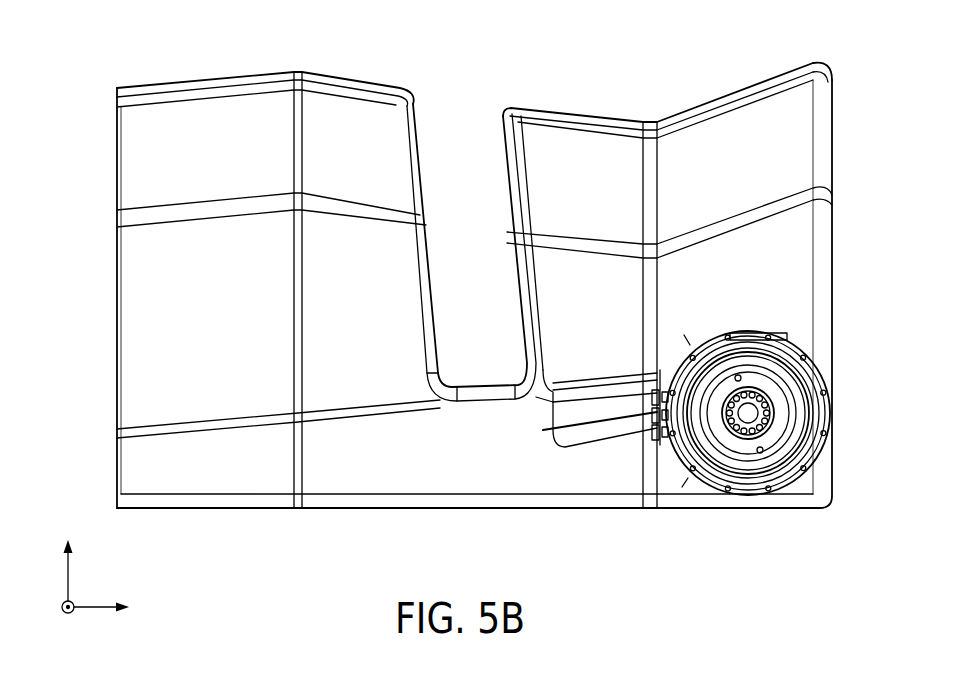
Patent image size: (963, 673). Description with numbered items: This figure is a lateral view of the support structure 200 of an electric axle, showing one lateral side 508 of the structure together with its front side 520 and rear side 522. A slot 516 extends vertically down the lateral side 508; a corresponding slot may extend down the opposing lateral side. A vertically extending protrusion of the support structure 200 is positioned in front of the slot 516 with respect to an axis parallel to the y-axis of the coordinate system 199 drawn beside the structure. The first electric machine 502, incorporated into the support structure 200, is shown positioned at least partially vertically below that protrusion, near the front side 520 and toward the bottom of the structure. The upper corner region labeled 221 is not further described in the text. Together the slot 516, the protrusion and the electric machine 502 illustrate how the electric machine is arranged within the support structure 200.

The support structure 200 is at (100, 82).
The lateral side 508 is at (240, 115).
The slot 516 is at (457, 130).
The top edge 221 is at (822, 57).
The front side 520 is at (840, 197).
The rear side 522 is at (100, 260).
The coordinate system 199 is at (80, 597).
The first electric machine 502 is at (753, 490).